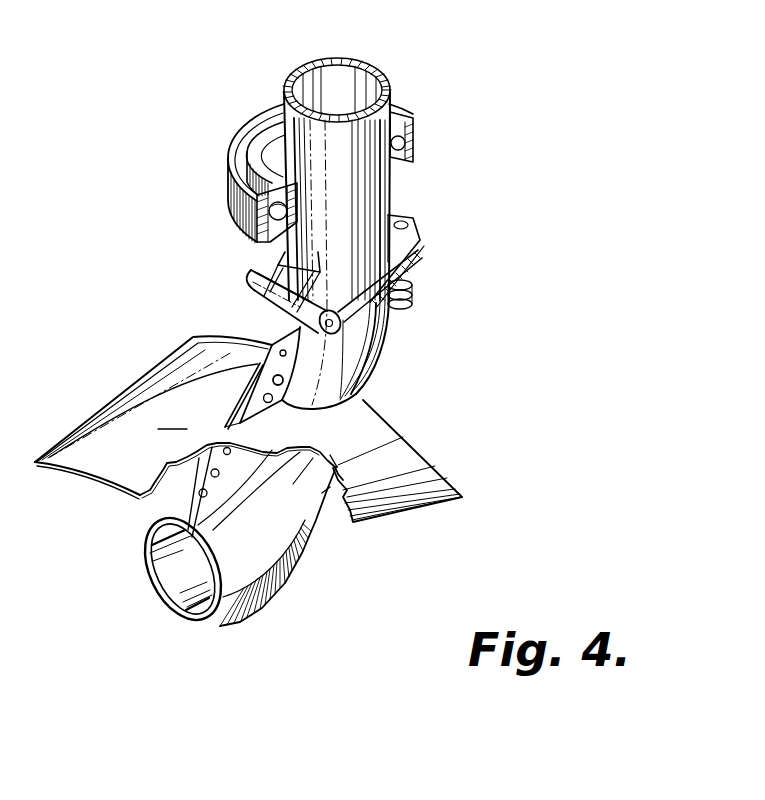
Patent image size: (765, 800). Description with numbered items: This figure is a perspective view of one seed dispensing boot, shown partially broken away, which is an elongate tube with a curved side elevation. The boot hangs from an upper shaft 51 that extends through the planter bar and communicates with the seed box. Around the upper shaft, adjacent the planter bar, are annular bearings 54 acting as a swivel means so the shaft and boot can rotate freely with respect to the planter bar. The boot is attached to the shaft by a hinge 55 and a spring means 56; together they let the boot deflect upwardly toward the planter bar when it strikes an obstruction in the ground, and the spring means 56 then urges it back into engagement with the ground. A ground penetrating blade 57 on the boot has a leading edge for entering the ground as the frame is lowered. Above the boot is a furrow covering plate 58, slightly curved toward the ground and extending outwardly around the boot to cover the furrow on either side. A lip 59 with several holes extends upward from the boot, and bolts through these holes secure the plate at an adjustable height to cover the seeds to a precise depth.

The upper shaft 51 is at (363, 186).
The annular bearings 54 is at (270, 215).
The hinge 55 is at (247, 282).
The spring means 56 is at (412, 280).
The ground penetrating blade 57 is at (287, 562).
The furrow covering plate 58 is at (248, 425).
The lip 59 is at (207, 483).